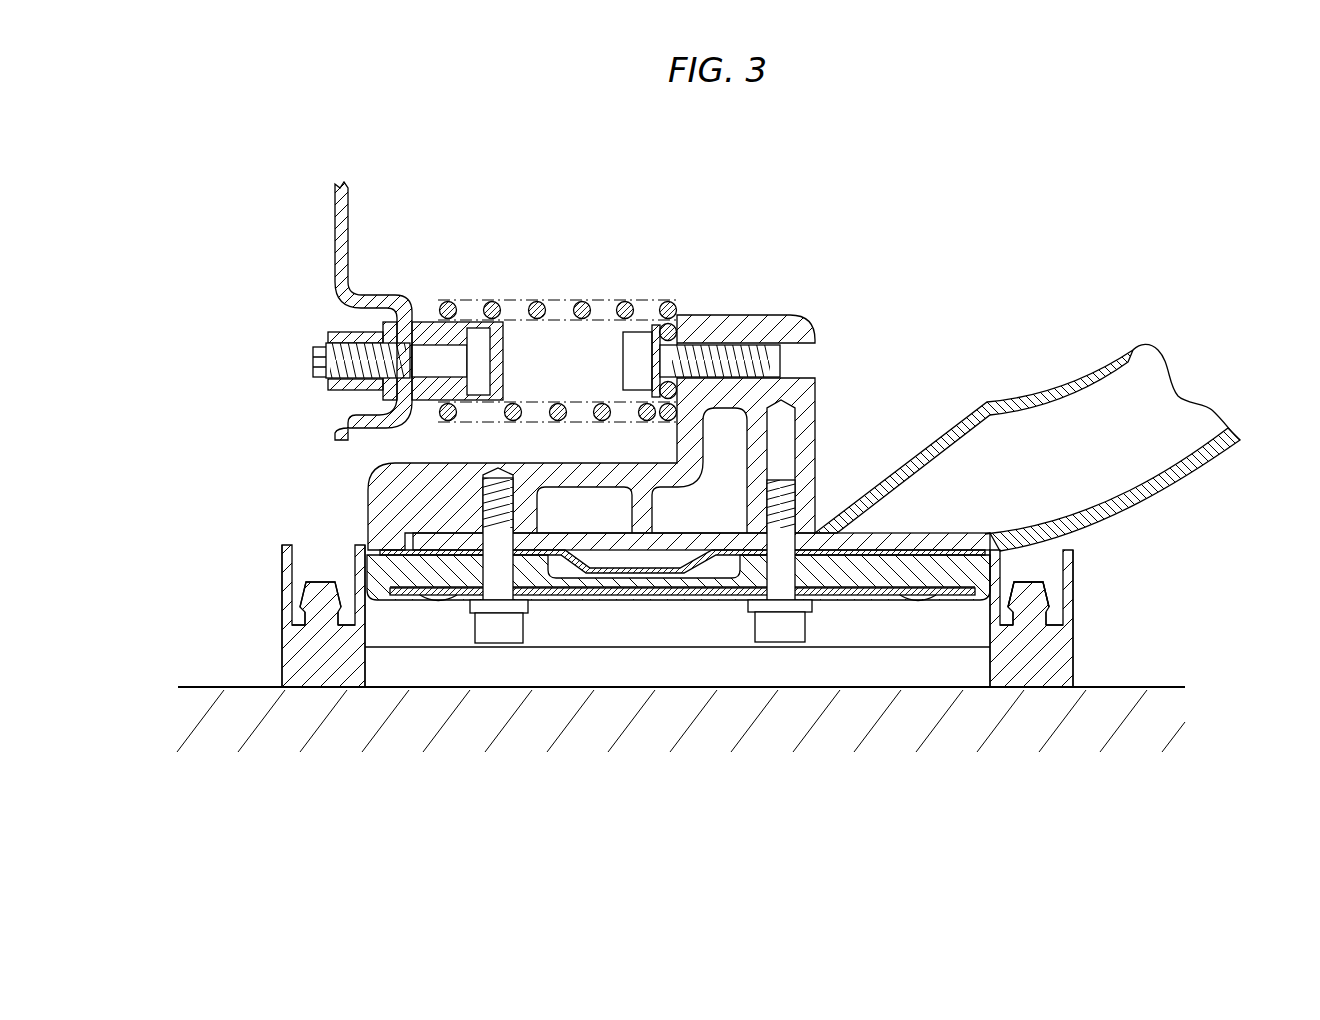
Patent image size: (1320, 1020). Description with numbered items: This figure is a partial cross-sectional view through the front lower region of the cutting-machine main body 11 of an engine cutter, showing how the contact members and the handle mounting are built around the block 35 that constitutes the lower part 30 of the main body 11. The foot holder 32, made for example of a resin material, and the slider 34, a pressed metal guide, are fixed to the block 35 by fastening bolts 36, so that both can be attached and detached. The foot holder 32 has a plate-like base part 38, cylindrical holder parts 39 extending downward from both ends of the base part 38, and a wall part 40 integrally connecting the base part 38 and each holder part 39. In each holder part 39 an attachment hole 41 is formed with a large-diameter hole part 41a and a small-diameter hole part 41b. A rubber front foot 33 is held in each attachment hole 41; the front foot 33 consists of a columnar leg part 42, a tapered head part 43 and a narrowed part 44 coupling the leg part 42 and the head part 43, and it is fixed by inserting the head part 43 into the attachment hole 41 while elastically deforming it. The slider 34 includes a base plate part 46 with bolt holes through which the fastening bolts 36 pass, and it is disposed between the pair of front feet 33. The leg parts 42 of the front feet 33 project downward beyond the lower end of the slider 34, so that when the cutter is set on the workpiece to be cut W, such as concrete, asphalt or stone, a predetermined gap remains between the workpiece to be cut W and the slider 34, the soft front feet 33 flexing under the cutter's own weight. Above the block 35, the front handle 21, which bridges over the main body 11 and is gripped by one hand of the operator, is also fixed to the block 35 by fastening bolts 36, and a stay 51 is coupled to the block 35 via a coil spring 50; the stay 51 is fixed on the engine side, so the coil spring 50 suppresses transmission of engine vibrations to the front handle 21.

The cutting-machine main body 11 is at (1058, 211).
The front handle 21 is at (1060, 395).
The lower part 30 is at (527, 432).
The foot holder 32 is at (627, 561).
The front foot 33 is at (776, 618).
The slider 34 is at (678, 681).
The block 35 is at (370, 515).
The fastening bolt 36 is at (498, 630).
The base part 38 is at (948, 573).
The holder part 39 is at (292, 545).
The wall part 40 is at (848, 633).
The attachment hole 41 is at (627, 551).
The large-diameter hole part 41a is at (302, 571).
The small-diameter hole part 41b is at (312, 620).
The leg part 42 is at (1071, 646).
The head part 43 is at (1040, 596).
The narrowed part 44 is at (1030, 623).
The base plate part 46 is at (888, 597).
The coil spring 50 is at (580, 298).
The stay 51 is at (350, 227).
The workpiece to be cut W is at (1180, 686).